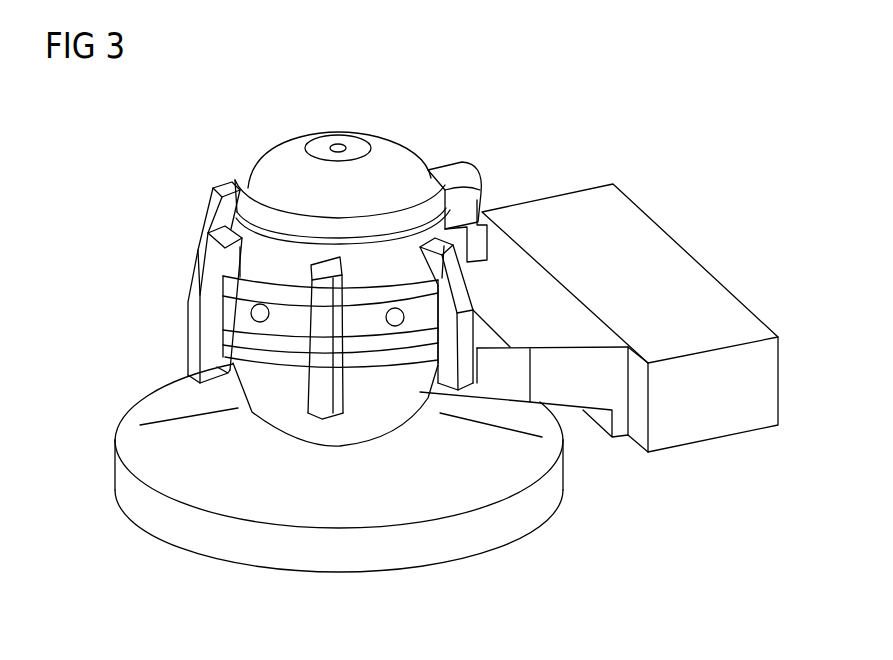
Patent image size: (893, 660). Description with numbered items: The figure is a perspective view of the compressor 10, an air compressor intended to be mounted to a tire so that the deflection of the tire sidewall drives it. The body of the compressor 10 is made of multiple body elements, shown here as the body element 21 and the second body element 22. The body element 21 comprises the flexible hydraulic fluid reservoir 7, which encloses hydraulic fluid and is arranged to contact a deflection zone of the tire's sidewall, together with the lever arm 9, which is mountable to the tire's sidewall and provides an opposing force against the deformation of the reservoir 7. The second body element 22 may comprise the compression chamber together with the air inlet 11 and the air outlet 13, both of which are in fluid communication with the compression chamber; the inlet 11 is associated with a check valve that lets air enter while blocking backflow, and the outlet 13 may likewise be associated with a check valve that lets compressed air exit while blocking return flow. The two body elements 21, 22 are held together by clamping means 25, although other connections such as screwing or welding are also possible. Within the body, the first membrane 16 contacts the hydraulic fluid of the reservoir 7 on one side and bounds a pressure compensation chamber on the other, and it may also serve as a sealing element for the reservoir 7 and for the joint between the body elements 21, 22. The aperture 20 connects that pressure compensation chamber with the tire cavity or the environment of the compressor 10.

The hydraulic fluid reservoir 7 is at (475, 497).
The lever arm 9 is at (680, 262).
The compressor 10 is at (192, 149).
The air inlet 11 is at (449, 181).
The air outlet 13 is at (323, 147).
The first membrane 16 is at (285, 348).
The aperture 20 is at (258, 313).
The body element 21 is at (104, 473).
The second body element 22 is at (203, 210).
The clamping means 25 is at (198, 285).